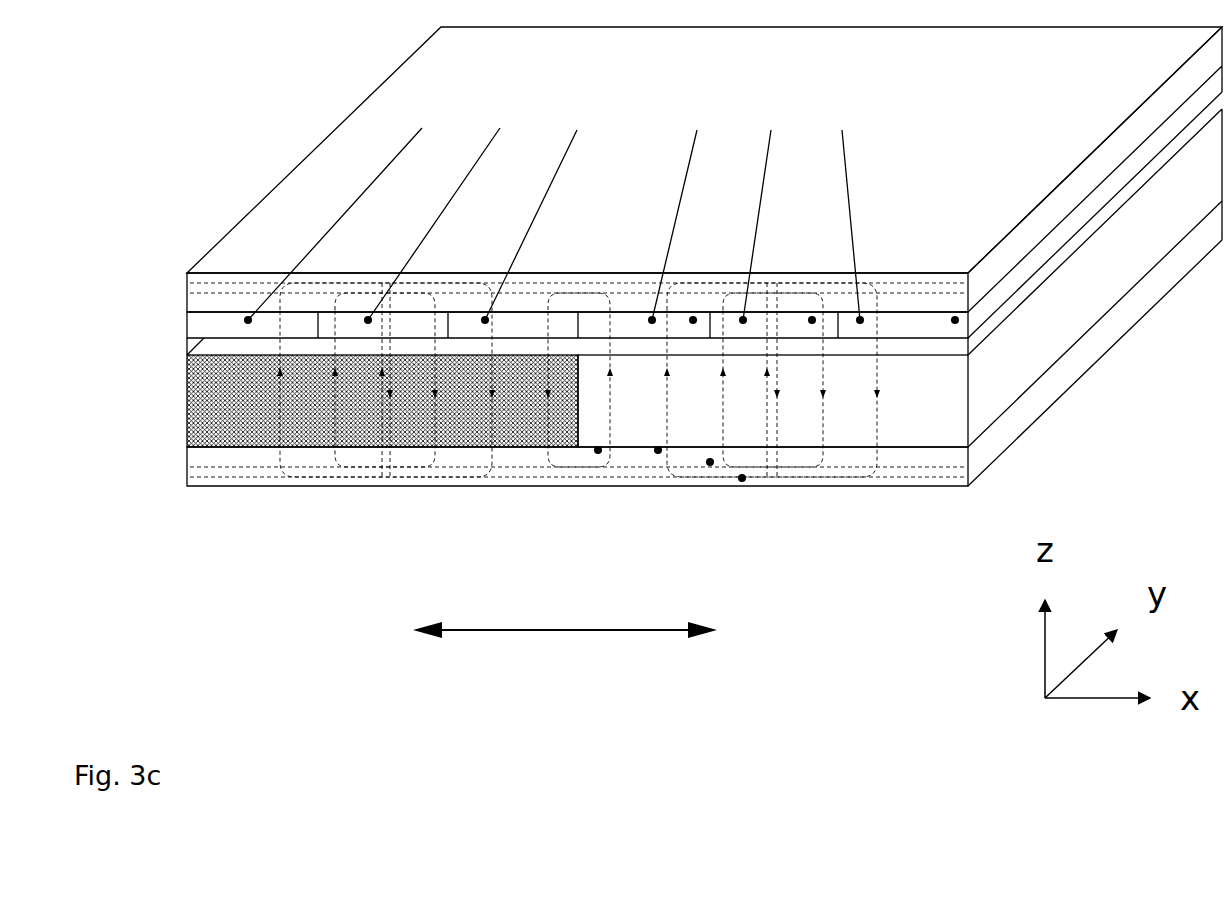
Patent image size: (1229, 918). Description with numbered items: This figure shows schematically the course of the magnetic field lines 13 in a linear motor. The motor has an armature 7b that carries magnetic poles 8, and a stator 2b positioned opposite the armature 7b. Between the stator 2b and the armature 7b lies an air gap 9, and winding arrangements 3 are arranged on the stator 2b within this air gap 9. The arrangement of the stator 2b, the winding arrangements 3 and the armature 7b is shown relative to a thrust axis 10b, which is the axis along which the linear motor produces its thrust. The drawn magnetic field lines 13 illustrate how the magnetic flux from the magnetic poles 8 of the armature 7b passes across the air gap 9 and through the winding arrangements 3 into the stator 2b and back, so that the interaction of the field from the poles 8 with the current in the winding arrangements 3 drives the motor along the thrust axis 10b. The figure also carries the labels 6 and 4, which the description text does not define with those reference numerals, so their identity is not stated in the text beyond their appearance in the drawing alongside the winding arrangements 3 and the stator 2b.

The stator 2b is at (1045, 212).
The winding arrangements 3 is at (704, 215).
The winding 6 is at (955, 320).
The stator 4 is at (1147, 152).
The air gap 9 is at (182, 344).
The magnetic poles 8 is at (1102, 270).
The armature 7b is at (1038, 400).
The magnetic field lines 13 is at (742, 478).
The thrust axis 10b is at (565, 655).